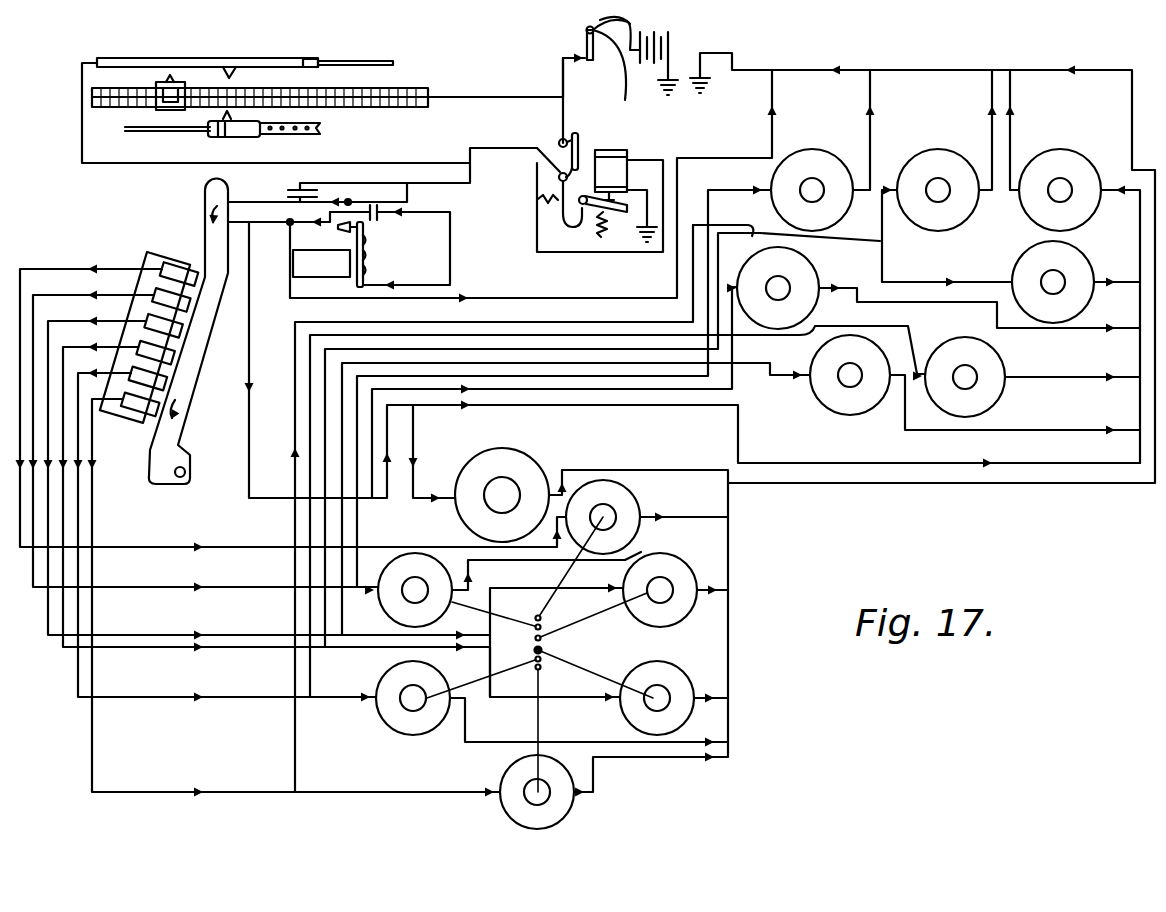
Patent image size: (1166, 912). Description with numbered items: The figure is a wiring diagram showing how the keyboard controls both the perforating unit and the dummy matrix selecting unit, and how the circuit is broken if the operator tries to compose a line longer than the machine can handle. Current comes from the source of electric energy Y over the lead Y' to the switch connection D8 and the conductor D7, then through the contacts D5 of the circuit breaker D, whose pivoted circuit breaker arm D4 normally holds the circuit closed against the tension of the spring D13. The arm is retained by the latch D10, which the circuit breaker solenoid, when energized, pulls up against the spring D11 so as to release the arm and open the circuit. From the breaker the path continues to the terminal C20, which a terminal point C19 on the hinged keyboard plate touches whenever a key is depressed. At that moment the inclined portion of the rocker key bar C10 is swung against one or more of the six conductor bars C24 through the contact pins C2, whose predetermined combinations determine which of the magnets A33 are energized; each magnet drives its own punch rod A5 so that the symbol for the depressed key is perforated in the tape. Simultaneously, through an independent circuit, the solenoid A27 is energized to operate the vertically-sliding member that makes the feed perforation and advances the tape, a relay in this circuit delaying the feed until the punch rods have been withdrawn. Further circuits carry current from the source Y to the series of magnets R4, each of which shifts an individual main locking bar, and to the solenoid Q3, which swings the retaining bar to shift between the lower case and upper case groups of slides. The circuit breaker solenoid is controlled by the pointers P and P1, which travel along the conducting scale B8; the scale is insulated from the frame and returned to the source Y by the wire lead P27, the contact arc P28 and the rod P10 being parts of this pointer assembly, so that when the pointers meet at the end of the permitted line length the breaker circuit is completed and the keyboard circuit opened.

The pointer P is at (240, 70).
The pointer P1 is at (172, 76).
The scale B8 is at (416, 96).
The wire lead P27 is at (474, 102).
The rod P10 is at (231, 121).
The contact arc P28 is at (616, 62).
The conductor D7 is at (560, 72).
The switch connection D8 is at (586, 43).
The contacts D5 is at (560, 141).
The circuit breaker arm D4 is at (579, 140).
The circuit breaker D is at (640, 151).
The spring D13 is at (553, 203).
The latch D10 is at (572, 224).
The spring D11 is at (601, 239).
The source of electric energy Y is at (663, 46).
The lead Y' is at (650, 24).
The terminal C20 is at (430, 183).
The terminal point C19 is at (410, 202).
The key bar C10 is at (204, 198).
The conductor bars C24 is at (170, 328).
The contact pins C2 is at (157, 412).
The magnets R4 is at (805, 163).
The solenoid Q3 is at (1068, 156).
The solenoid A27 is at (528, 456).
The magnets A33 is at (622, 501).
The punch rods A5 is at (543, 652).